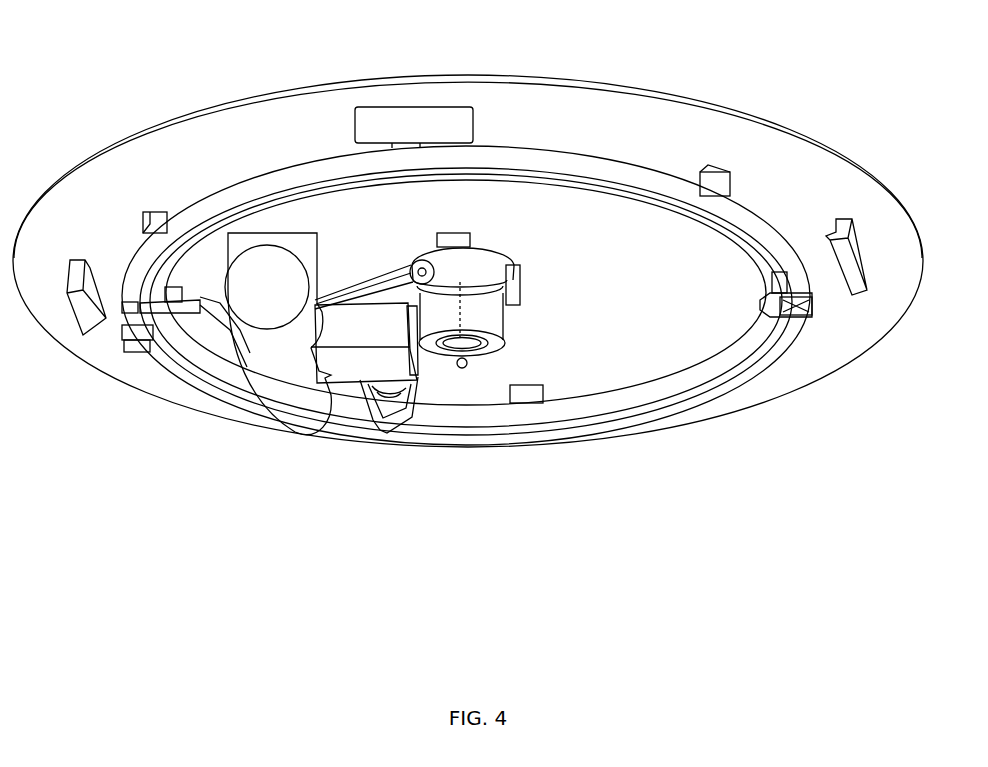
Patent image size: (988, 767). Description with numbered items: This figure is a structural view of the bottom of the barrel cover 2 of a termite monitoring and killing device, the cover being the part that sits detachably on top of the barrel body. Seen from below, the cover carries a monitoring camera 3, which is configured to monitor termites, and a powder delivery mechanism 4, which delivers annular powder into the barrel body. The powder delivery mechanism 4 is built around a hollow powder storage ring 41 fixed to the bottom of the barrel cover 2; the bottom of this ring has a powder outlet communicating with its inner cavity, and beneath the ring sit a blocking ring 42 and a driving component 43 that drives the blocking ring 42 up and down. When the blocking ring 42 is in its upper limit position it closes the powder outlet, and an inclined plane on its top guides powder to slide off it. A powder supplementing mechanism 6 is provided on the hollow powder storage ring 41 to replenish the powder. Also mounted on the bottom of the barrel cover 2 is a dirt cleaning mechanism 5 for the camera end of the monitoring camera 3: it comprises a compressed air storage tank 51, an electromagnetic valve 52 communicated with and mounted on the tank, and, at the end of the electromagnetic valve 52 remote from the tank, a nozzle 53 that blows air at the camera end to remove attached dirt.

The barrel cover 2 is at (802, 160).
The monitoring camera 3 is at (486, 262).
The powder delivery mechanism 4 is at (467, 404).
The hollow powder storage ring 41 is at (560, 410).
The blocking ring 42 is at (650, 423).
The driving component 43 is at (793, 315).
The dirt cleaning mechanism 5 is at (281, 409).
The compressed air storage tank 51 is at (270, 352).
The electromagnetic valve 52 is at (383, 418).
The nozzle 53 is at (360, 363).
The powder supplementing mechanism 6 is at (160, 320).